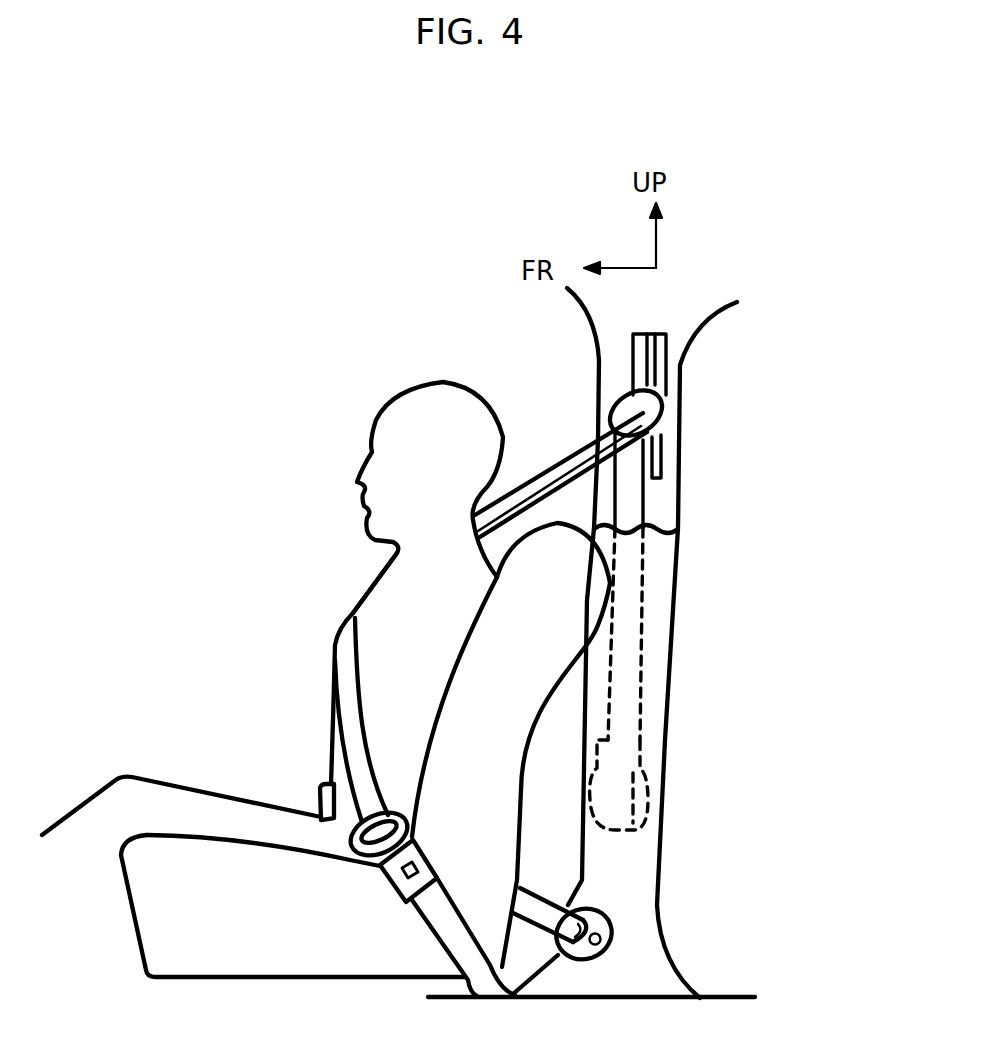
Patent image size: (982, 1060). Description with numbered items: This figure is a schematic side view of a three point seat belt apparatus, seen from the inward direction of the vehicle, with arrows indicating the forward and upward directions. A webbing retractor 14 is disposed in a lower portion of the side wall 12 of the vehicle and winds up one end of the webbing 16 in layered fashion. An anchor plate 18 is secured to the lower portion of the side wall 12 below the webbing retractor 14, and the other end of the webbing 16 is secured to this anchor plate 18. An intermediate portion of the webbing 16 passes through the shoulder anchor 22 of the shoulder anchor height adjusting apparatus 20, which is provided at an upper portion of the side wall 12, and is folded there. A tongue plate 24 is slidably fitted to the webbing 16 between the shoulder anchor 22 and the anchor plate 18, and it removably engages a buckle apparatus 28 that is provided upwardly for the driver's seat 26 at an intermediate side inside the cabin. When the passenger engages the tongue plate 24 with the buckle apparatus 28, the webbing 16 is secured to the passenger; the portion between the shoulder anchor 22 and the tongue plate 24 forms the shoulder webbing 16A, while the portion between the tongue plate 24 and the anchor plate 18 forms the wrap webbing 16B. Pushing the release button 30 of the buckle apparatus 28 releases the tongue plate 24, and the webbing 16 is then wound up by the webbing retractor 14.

The side wall 12 is at (623, 307).
The webbing retractor 14 is at (650, 805).
The webbing 16 is at (344, 677).
The shoulder webbing 16A is at (345, 706).
The wrap webbing 16B is at (336, 755).
The anchor plate 18 is at (598, 928).
The shoulder anchor height adjusting apparatus 20 is at (668, 333).
The shoulder anchor 22 is at (667, 423).
The tongue plate 24 is at (410, 826).
The driver's seat 26 is at (525, 813).
The buckle apparatus 28 is at (385, 883).
The release button 30 is at (408, 898).